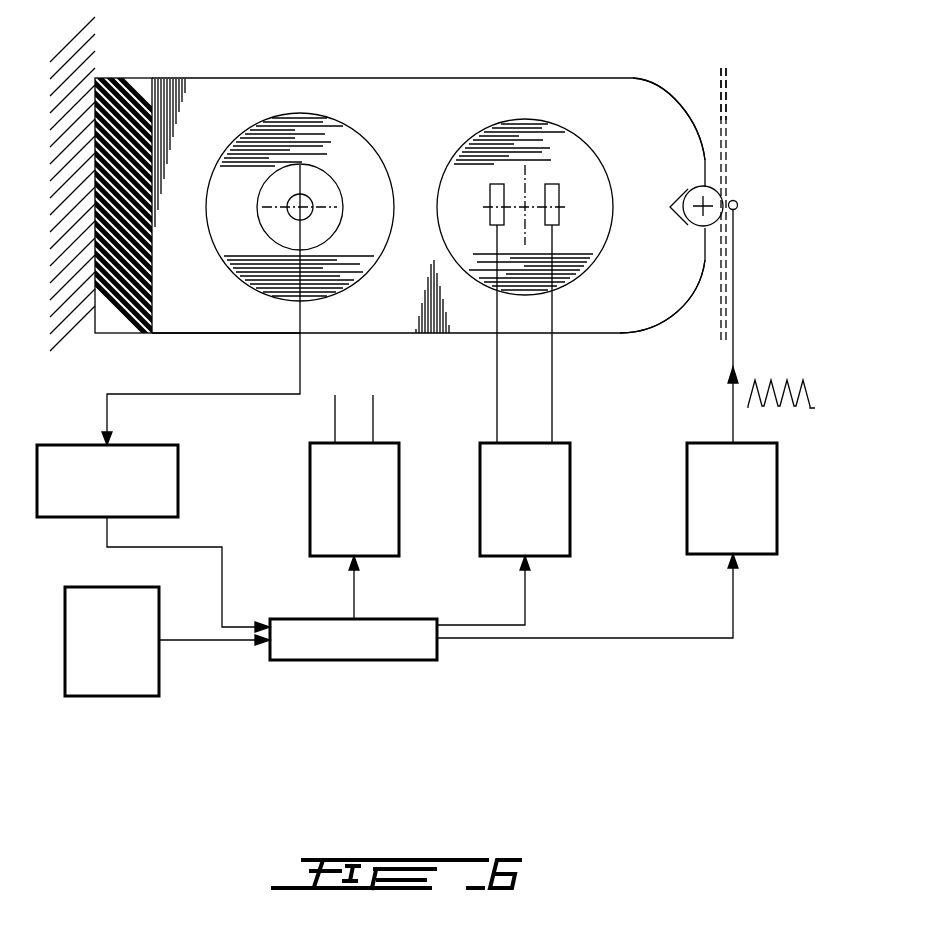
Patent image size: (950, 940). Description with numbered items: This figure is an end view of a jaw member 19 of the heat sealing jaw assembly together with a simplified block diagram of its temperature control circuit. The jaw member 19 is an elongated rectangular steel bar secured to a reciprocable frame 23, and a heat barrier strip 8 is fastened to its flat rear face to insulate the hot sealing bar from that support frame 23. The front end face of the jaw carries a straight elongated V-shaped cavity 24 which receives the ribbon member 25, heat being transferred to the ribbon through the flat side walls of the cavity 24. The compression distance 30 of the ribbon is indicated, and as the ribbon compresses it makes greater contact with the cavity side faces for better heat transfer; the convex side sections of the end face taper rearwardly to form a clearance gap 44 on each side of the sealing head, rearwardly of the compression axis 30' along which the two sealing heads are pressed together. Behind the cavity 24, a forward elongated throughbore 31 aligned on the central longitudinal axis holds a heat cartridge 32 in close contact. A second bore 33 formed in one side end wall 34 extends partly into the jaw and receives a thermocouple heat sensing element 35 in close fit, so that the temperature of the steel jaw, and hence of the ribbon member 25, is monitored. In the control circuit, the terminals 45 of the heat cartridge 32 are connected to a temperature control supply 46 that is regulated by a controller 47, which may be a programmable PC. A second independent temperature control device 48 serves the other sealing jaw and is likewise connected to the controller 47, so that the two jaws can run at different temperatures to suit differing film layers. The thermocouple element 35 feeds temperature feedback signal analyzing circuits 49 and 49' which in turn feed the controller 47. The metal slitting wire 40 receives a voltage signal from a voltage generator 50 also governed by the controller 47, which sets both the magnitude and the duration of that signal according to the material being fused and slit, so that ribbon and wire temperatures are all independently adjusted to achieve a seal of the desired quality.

The heat barrier strip 8 is at (122, 315).
The jaw member 19 is at (237, 90).
The reciprocable frame 23 is at (70, 278).
The cavity 24 is at (684, 186).
The ribbon member 25 is at (683, 228).
The compression distance 30 is at (759, 204).
The compression axis 30' is at (687, 75).
The forward elongated throughbore 31 is at (442, 205).
The heat cartridge 32 is at (580, 258).
The second bore 33 is at (212, 205).
The side end wall 34 is at (266, 322).
The thermocouple heat sensing element 35 is at (320, 135).
The metal slitting wire 40 is at (737, 207).
The clearance gap 44 is at (693, 100).
The terminals 45 is at (552, 184).
The temperature control supply 46 is at (570, 497).
The controller 47 is at (437, 650).
The second independent temperature control device 48 is at (399, 497).
The temperature feedback signal analyzing circuit 49 is at (153, 535).
The second temperature feedback signal analyzing circuit 49' is at (167, 641).
The voltage generator 50 is at (777, 497).